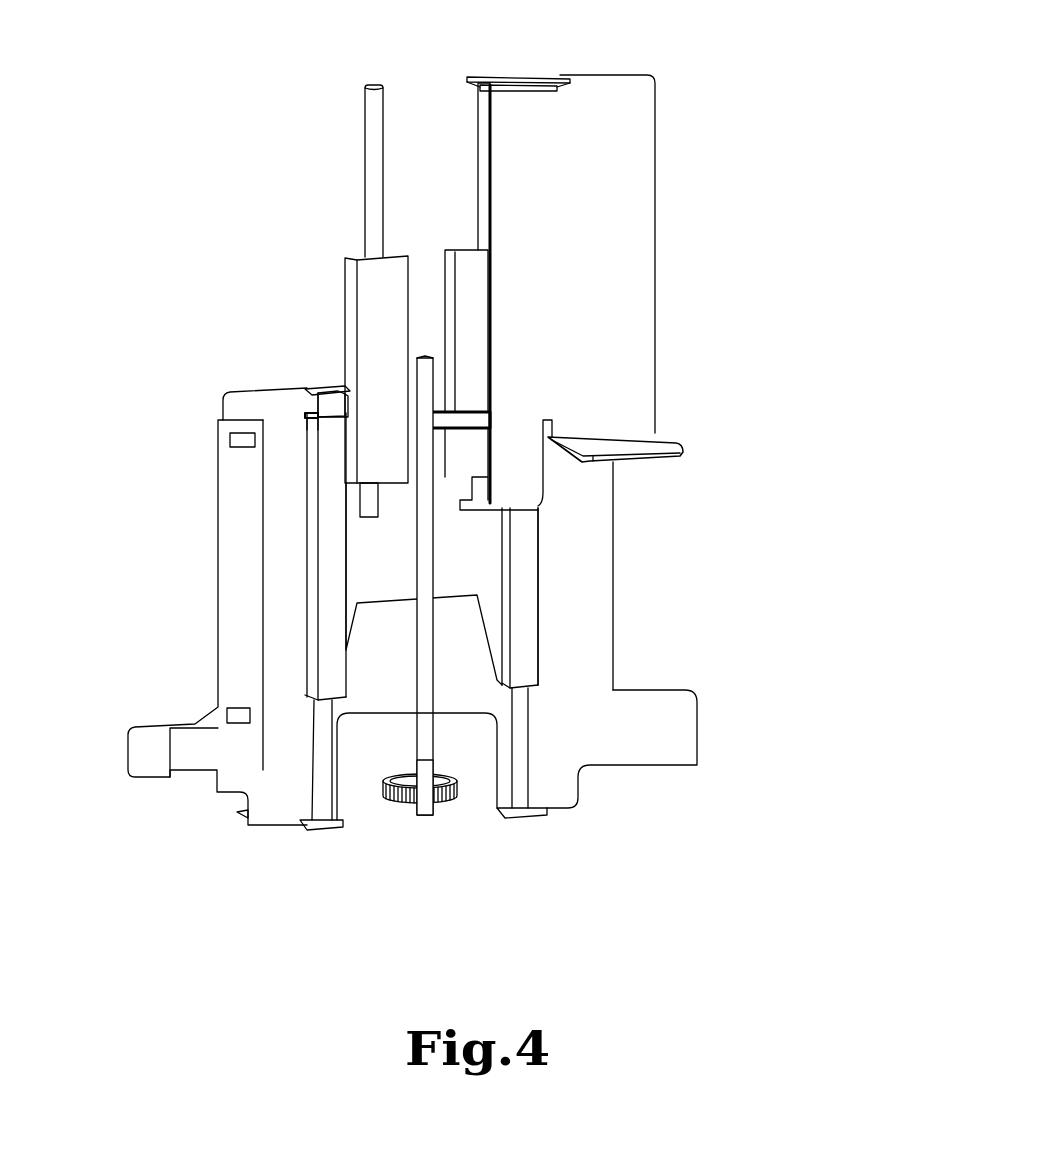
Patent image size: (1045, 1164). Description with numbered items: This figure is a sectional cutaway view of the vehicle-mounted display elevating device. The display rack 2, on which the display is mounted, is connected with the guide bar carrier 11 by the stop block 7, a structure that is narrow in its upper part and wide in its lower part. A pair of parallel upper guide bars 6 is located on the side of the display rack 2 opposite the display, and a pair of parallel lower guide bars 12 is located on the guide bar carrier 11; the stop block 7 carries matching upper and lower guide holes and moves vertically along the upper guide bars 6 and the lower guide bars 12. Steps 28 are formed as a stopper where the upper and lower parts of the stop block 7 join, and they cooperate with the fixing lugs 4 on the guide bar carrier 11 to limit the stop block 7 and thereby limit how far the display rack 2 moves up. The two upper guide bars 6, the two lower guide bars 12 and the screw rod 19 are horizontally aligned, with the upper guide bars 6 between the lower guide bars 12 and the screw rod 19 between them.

The display rack 2 is at (608, 143).
The upper guide bars 6 is at (485, 117).
The stop block 7 is at (373, 317).
The fixing lugs 4 is at (318, 387).
The steps 28 is at (318, 416).
The guide bar carrier 11 is at (578, 535).
The screw rod 19 is at (420, 728).
The lower guide bars 12 is at (518, 770).